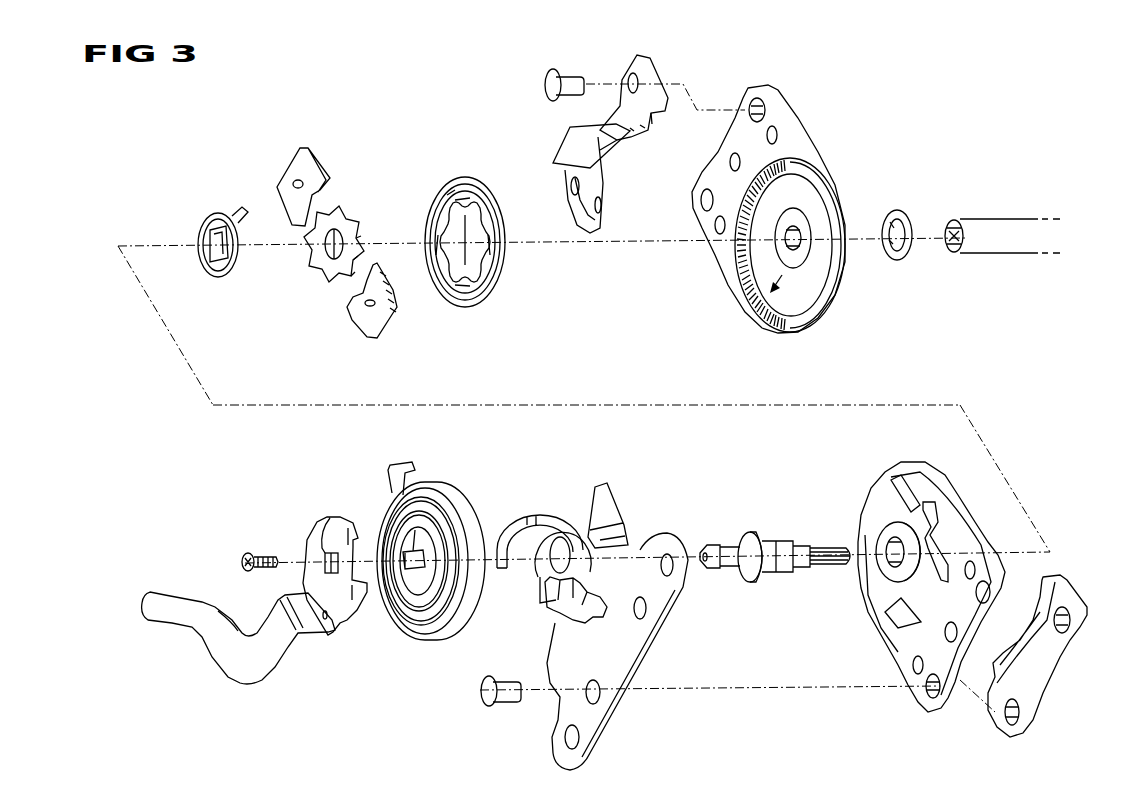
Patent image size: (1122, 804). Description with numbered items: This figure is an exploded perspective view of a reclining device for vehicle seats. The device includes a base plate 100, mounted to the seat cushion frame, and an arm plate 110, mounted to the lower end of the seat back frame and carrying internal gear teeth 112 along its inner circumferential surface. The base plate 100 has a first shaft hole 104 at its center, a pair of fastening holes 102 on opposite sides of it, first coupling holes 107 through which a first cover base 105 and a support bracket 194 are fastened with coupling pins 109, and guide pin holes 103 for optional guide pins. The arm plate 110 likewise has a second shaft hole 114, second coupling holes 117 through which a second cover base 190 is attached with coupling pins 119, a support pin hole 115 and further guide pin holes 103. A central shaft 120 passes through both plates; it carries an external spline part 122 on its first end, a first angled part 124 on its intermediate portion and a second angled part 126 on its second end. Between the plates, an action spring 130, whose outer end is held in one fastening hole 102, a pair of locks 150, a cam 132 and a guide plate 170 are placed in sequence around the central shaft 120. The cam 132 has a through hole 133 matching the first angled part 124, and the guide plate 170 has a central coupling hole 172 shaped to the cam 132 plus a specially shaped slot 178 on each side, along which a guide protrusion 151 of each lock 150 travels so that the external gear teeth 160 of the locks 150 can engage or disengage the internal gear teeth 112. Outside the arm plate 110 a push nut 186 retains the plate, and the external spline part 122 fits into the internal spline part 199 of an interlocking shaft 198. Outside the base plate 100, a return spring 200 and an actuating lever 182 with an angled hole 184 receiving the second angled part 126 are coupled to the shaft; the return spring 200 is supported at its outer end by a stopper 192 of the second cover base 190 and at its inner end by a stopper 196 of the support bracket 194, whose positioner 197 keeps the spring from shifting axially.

The base plate 100 is at (897, 581).
The fastening holes 102 is at (921, 505).
The guide pin holes 103 is at (722, 217).
The first shaft hole 104 is at (890, 545).
The first cover base 105 is at (1027, 680).
The first coupling holes 107 is at (928, 690).
The coupling pins 109 is at (508, 703).
The arm plate 110 is at (790, 222).
The internal gear teeth 112 is at (770, 312).
The second shaft hole 114 is at (803, 215).
The support pin hole 115 is at (730, 165).
The second coupling holes 117 is at (763, 96).
The coupling pins 119 is at (545, 86).
The central shaft 120 is at (770, 575).
The external spline part 122 is at (829, 586).
The first angled part 124 is at (781, 546).
The second angled part 126 is at (715, 575).
The action spring 130 is at (218, 278).
The cam 132 is at (343, 207).
The through hole 133 is at (330, 262).
The locks 150 is at (308, 146).
The guide protrusion 151 is at (410, 334).
The external gear teeth 160 is at (393, 313).
The guide plate 170 is at (482, 300).
The coupling hole 172 is at (470, 230).
The specially shaped slot 178 is at (448, 190).
The actuating lever 182 is at (195, 598).
The angled hole 184 is at (333, 520).
The push nut 186 is at (910, 218).
The second cover base 190 is at (655, 68).
The stopper 192 is at (598, 150).
The support bracket 194 is at (674, 538).
The stopper 196 is at (523, 515).
The positioner 197 is at (536, 600).
The interlocking shaft 198 is at (1012, 246).
The internal spline part 199 is at (948, 248).
The return spring 200 is at (432, 641).